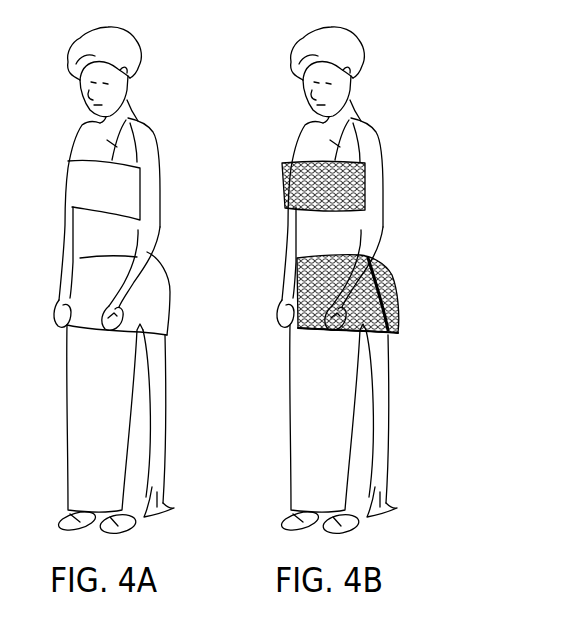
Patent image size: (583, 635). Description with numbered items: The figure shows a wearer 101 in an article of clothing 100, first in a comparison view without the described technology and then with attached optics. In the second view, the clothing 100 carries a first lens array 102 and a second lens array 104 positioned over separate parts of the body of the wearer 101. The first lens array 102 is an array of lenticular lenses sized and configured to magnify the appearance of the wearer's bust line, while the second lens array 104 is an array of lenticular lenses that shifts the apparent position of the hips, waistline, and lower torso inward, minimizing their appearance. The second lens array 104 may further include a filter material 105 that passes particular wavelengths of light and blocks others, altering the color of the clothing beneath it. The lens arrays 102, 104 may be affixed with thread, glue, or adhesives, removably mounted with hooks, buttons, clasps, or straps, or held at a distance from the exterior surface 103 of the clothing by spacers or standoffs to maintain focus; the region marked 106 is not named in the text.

In FIG. 4B, the article of clothing 100 is at (487, 207).
In FIG. 4A, the wearer 101 is at (122, 130).
In FIG. 4B, the wearer 101 is at (243, 78).
In FIG. 4B, the first lens array 102 is at (283, 202).
In FIG. 4B, the exterior surface 103 is at (290, 443).
In FIG. 4B, the second lens array 104 is at (399, 302).
In FIG. 4B, the filter material 105 is at (397, 284).
In FIG. 4B, the hem band 106 is at (399, 329).